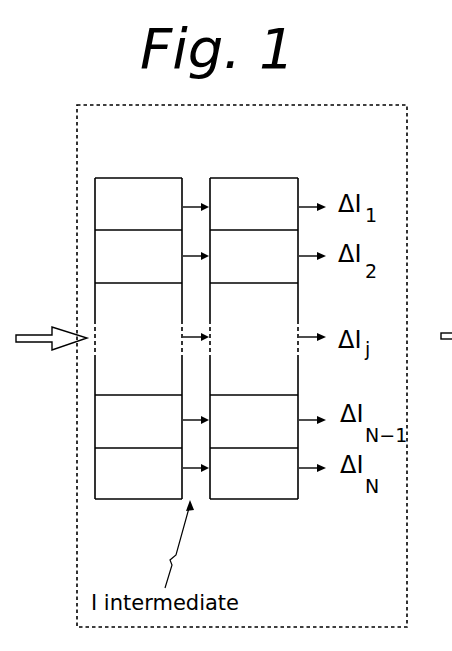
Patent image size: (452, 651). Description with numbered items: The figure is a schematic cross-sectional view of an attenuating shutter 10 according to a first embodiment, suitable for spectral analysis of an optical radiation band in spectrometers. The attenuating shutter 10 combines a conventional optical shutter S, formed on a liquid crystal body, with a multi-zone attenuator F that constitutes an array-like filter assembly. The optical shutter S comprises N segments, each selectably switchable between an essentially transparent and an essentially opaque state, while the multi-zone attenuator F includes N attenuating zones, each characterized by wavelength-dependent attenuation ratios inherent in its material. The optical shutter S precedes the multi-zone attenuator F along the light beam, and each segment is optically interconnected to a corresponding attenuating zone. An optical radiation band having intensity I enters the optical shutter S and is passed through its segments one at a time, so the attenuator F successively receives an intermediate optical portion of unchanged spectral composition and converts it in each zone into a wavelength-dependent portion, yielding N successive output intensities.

The attenuating shutter 10 is at (344, 80).
The optical shutter S is at (120, 178).
The multi-zone attenuator F is at (230, 178).
The intensity of optical radiation band I is at (51, 331).